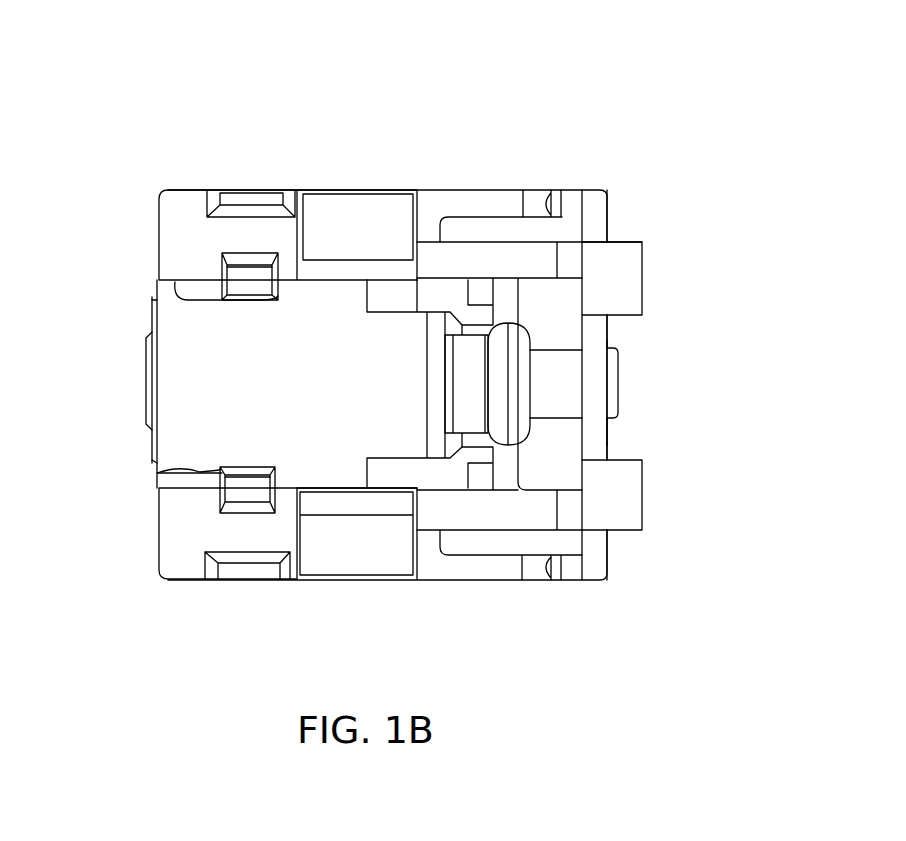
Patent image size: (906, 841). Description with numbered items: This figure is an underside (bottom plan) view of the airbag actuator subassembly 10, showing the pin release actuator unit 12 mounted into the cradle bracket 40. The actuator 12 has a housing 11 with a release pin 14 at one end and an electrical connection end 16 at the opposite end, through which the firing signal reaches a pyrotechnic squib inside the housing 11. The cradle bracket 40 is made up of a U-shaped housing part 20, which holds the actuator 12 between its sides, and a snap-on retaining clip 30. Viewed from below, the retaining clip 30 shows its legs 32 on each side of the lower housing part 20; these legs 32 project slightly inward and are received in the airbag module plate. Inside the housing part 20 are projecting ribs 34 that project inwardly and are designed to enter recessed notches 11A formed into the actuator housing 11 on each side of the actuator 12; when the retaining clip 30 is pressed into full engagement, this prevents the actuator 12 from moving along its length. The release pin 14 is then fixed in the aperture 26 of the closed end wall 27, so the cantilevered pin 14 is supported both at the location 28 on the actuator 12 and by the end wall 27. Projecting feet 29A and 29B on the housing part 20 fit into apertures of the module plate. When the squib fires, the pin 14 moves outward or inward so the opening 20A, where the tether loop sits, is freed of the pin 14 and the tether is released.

The airbag actuator subassembly 10 is at (684, 96).
The housing 11 is at (165, 340).
The notches 11A is at (268, 300).
The pin release actuator unit 12 is at (172, 437).
The release pin 14 is at (613, 385).
The electrical connection end 16 is at (146, 390).
The U shaped housing part 20 is at (625, 520).
The opening 20A is at (562, 300).
The aperture 26 is at (607, 343).
The closed end wall 27 is at (607, 440).
The location 28 is at (470, 445).
The projecting foot 29A is at (404, 190).
The projecting foot 29B is at (632, 242).
The snap-on retaining clip 30 is at (167, 183).
The legs 32 is at (268, 192).
The projecting ribs 34 is at (233, 270).
The cradle bracket 40 is at (580, 588).